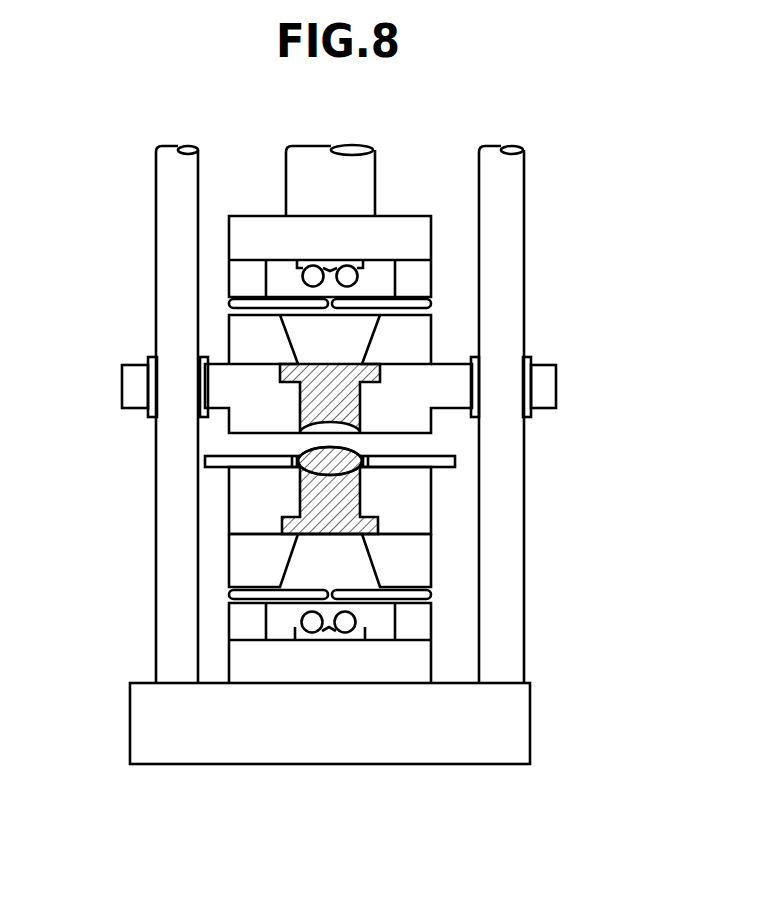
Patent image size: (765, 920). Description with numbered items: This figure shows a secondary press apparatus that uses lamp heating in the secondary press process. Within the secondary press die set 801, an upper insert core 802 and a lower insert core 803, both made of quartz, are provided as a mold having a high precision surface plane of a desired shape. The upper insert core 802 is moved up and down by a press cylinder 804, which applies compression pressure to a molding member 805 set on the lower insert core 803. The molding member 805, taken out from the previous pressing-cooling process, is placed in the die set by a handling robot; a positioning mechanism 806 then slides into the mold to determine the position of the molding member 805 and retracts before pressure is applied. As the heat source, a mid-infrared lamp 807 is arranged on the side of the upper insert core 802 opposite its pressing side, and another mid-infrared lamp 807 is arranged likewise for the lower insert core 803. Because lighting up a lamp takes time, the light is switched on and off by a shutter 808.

The secondary press die set 801 is at (413, 504).
The upper insert core 802 is at (278, 377).
The lower insert core 803 is at (282, 522).
The press cylinder 804 is at (368, 182).
The molding member 805 is at (305, 447).
The positioning mechanism 806 is at (213, 468).
The mid-infrared lamp 807 is at (358, 278).
The shutter 808 is at (358, 309).